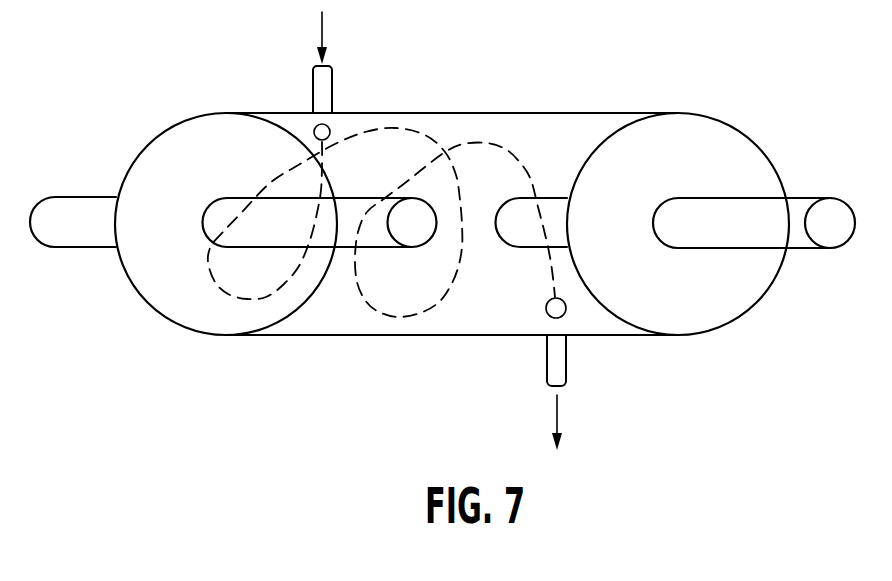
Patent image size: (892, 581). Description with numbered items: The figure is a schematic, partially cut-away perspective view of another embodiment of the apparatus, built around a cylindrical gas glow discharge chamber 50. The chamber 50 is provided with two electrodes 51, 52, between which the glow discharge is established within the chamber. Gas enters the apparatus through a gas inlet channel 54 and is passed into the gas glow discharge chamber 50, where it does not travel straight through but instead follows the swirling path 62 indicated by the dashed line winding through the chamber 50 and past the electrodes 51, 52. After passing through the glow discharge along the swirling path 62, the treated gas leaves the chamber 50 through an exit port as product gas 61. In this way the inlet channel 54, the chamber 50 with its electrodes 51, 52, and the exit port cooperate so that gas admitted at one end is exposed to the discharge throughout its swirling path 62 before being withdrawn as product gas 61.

The gas glow discharge chamber 50 is at (518, 298).
The electrode 51 is at (495, 227).
The electrode 52 is at (420, 200).
The gas inlet channel 54 is at (334, 82).
The product gas 61 is at (560, 412).
The swirling path 62 is at (378, 316).